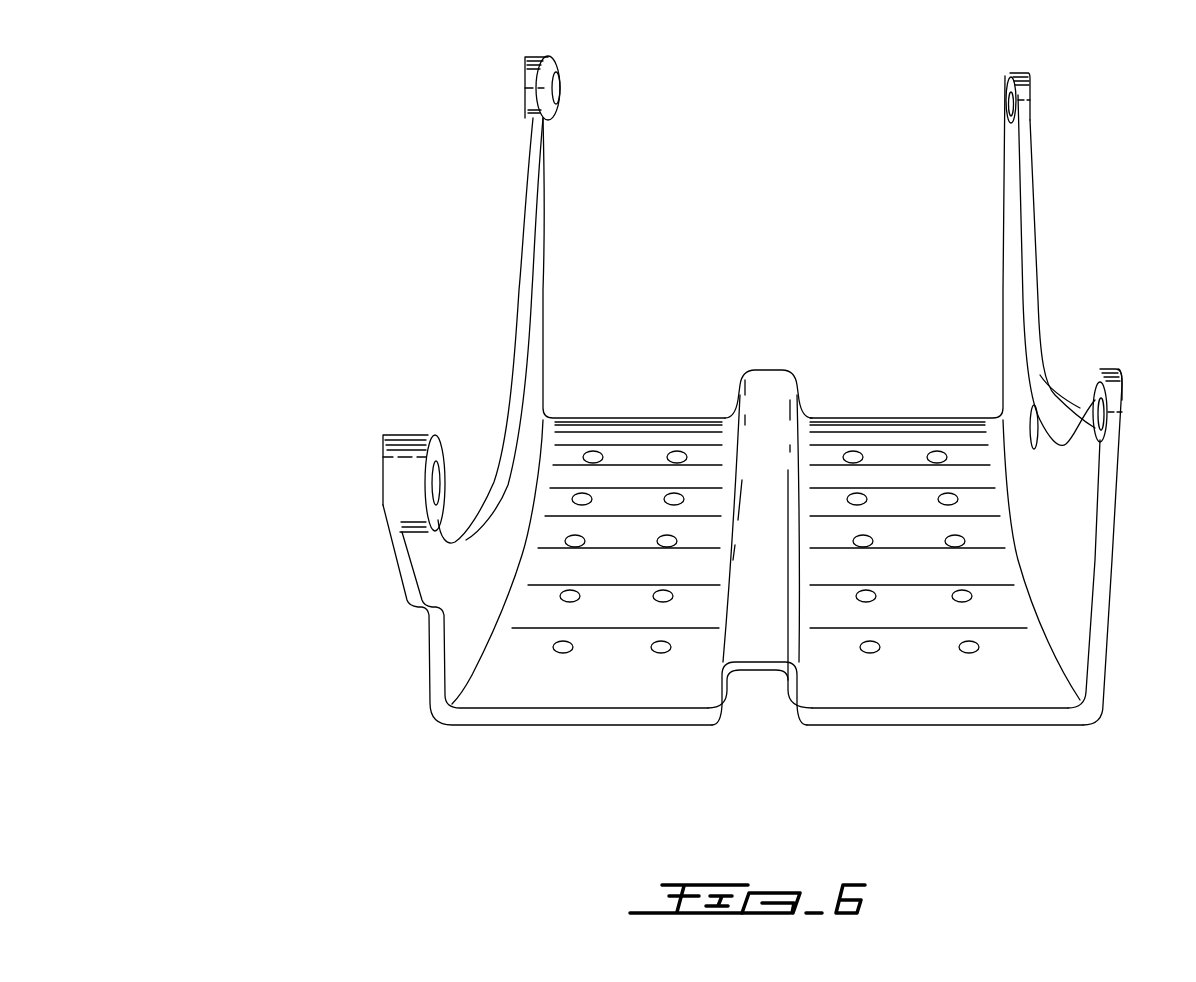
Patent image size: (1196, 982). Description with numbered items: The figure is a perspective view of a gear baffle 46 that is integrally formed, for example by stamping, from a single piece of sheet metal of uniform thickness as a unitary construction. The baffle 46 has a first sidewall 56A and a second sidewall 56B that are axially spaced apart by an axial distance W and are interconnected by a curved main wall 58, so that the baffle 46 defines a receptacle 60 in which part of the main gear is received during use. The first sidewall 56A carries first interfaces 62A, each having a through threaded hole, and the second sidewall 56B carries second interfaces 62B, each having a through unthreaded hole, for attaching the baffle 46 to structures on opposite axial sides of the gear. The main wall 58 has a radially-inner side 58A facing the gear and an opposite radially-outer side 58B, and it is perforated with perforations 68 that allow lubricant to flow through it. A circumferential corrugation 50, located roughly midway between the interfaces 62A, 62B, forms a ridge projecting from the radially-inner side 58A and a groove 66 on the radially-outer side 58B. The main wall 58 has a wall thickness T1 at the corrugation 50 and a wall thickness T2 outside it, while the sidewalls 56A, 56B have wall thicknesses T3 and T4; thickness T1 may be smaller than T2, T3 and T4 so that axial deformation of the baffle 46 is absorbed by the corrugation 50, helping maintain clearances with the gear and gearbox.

The baffle 46 is at (326, 210).
The corrugation 50 is at (767, 390).
The first sidewall 56A is at (520, 355).
The second sidewall 56B is at (1030, 262).
The main wall 58 is at (845, 717).
The radially-inner side 58A is at (932, 633).
The radially-outer side 58B is at (958, 736).
The receptacle 60 is at (652, 373).
The first interfaces 62A is at (547, 92).
The second interfaces 62B is at (1016, 100).
The groove 66 is at (778, 703).
The perforations 68 is at (937, 451).
The axial distance W is at (1003, 52).
The wall thickness T1 is at (763, 620).
The wall thickness T2 is at (642, 640).
The wall thickness T3 is at (512, 655).
The wall thickness T4 is at (1020, 655).